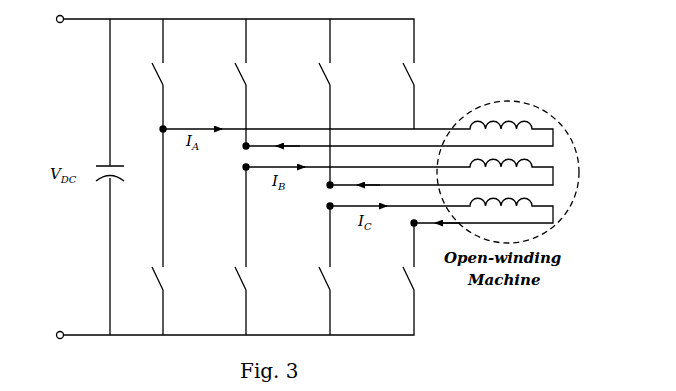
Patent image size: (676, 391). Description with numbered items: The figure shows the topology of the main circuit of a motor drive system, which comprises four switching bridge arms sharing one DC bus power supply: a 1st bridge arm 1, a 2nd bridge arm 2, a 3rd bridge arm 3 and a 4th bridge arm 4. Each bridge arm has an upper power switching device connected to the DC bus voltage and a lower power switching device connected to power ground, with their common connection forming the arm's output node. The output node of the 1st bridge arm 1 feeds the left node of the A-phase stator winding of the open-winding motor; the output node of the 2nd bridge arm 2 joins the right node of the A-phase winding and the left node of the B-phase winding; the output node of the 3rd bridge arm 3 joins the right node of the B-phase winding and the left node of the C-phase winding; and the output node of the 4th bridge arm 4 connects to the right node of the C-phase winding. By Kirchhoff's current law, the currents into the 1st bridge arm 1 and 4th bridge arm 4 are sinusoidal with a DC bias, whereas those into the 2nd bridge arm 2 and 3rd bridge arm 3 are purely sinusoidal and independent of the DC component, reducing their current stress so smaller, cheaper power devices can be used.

The 1st bridge arm 1 is at (154, 130).
The 2nd bridge arm 2 is at (237, 156).
The 3rd bridge arm 3 is at (321, 195).
The 4th bridge arm 4 is at (404, 228).